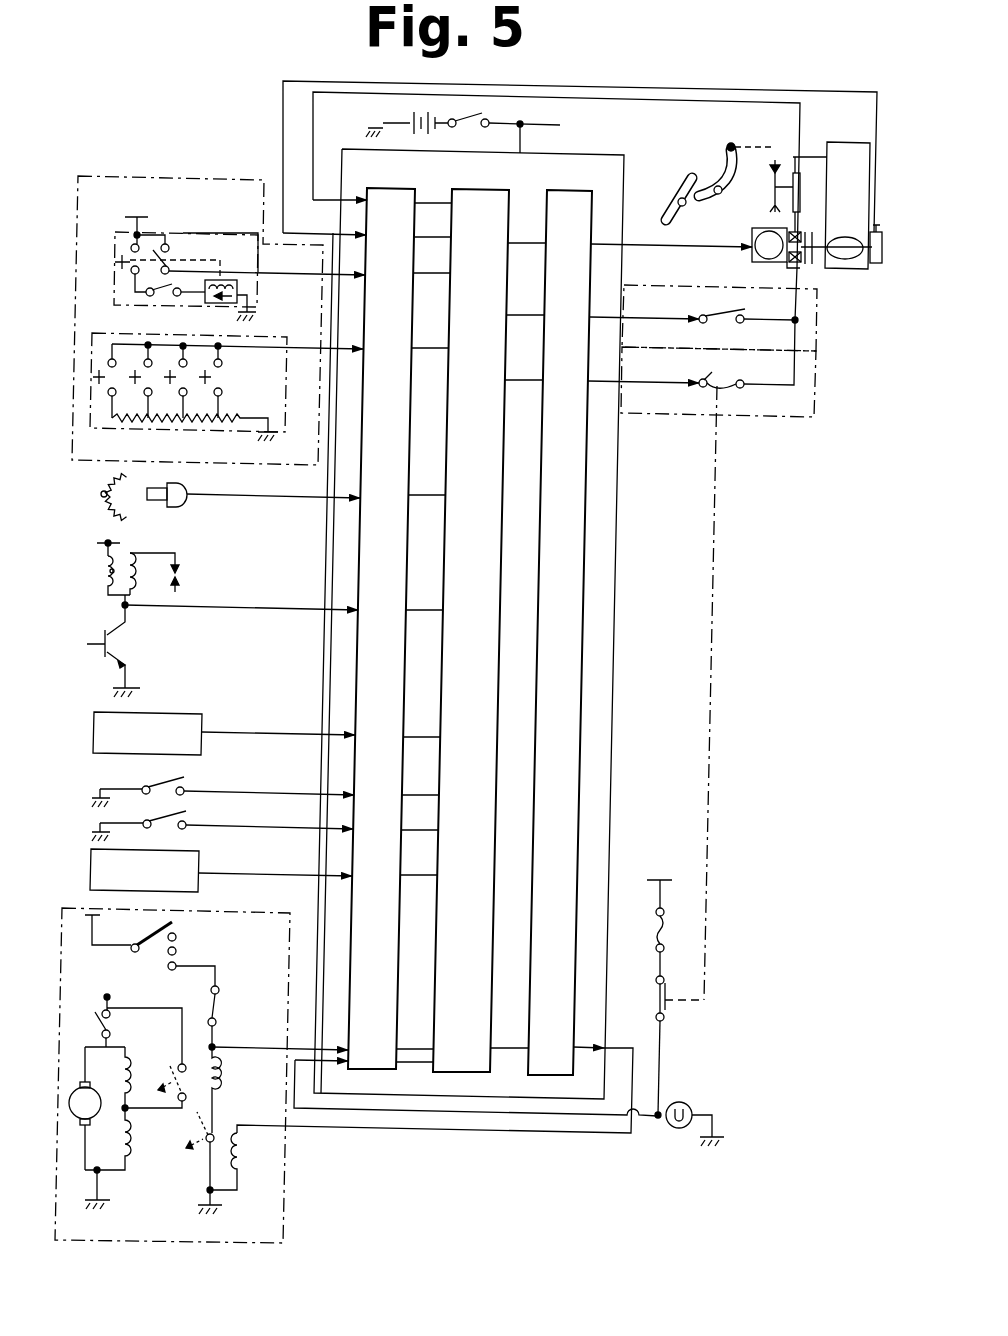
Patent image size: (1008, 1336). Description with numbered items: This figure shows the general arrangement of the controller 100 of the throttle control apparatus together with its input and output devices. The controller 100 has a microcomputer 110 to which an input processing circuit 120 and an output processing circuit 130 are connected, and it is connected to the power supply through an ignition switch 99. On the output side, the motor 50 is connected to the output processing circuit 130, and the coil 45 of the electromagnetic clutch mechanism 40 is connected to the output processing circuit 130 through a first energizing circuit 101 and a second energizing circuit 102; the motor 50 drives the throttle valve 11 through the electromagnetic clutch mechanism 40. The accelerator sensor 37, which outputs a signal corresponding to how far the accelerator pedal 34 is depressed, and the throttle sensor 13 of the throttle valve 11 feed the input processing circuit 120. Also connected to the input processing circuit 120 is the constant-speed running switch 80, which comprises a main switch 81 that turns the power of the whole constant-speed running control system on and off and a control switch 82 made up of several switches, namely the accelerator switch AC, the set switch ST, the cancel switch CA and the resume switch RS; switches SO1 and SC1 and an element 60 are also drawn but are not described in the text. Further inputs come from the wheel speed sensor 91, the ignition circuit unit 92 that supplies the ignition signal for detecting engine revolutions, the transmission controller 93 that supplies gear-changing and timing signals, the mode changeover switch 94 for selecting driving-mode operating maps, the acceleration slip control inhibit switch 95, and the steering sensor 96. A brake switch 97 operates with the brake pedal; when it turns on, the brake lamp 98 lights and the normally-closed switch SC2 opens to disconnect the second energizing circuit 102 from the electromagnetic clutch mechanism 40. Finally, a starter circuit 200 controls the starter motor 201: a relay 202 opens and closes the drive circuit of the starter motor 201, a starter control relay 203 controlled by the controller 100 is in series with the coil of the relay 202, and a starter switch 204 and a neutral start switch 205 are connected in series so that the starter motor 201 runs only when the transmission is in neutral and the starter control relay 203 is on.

The controller 100 is at (617, 752).
The input processing circuit 120 is at (407, 170).
The microcomputer 110 is at (489, 170).
The output processing circuit 130 is at (574, 170).
The ignition switch 99 is at (487, 118).
The constant-speed running switch 80 is at (248, 177).
The main switch 81 is at (203, 232).
The control switch 82 is at (273, 328).
The switch SO1 is at (133, 250).
The switch SC1 is at (169, 268).
The accelerator switch AC is at (225, 377).
The cancel switch CA is at (137, 412).
The set switch ST is at (173, 412).
The resume switch RS is at (210, 410).
The wheel speed sensor 91 is at (183, 501).
The ignition circuit unit 92 is at (190, 585).
The transmission controller 93 is at (204, 720).
The mode changeover switch 94 is at (190, 782).
The acceleration slip control inhibit switch 95 is at (190, 818).
The steering sensor 96 is at (201, 863).
The brake switch 97 is at (666, 1010).
The brake lamp 98 is at (685, 1103).
The starter circuit 200 is at (215, 905).
The starter motor 201 is at (96, 1118).
The relay 202 is at (216, 1072).
The starter control relay 203 is at (216, 1177).
The starter switch 204 is at (185, 942).
The neutral start switch 205 is at (219, 1002).
The accelerator pedal 34 is at (714, 172).
The accelerator sensor 37 is at (793, 172).
The electromagnetic clutch mechanism 40 is at (791, 268).
The motor 50 is at (752, 231).
The coil 45 is at (788, 263).
The throttle valve 11 is at (846, 240).
The throttle sensor 13 is at (874, 263).
The limit switch 60 is at (720, 312).
The normally-closed switch SC2 is at (718, 378).
The first energizing circuit 101 is at (817, 330).
The second energizing circuit 102 is at (815, 392).